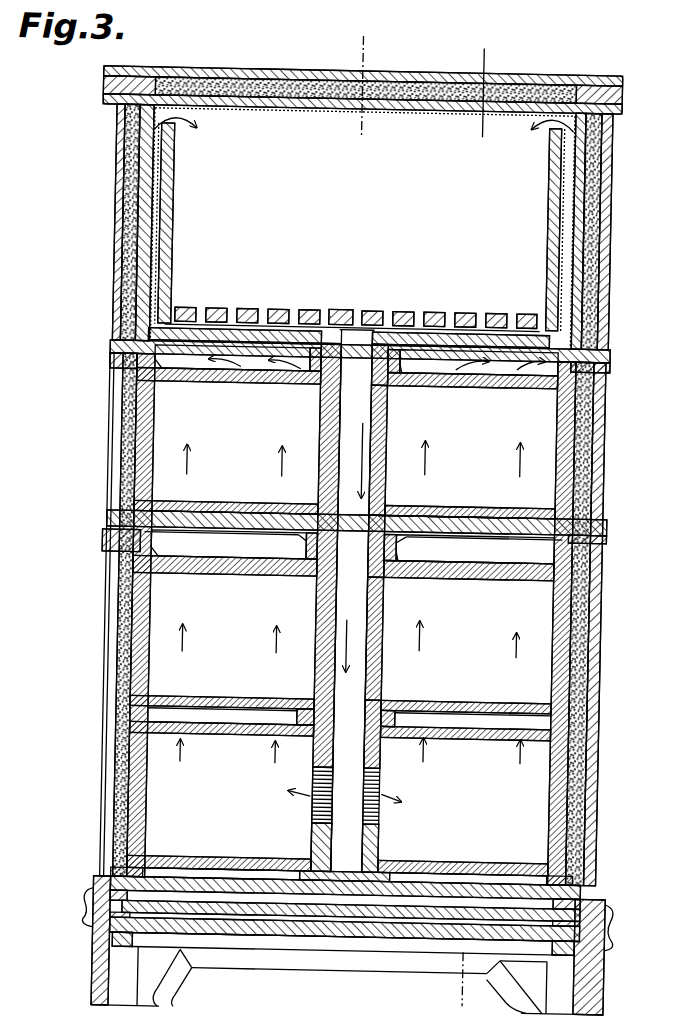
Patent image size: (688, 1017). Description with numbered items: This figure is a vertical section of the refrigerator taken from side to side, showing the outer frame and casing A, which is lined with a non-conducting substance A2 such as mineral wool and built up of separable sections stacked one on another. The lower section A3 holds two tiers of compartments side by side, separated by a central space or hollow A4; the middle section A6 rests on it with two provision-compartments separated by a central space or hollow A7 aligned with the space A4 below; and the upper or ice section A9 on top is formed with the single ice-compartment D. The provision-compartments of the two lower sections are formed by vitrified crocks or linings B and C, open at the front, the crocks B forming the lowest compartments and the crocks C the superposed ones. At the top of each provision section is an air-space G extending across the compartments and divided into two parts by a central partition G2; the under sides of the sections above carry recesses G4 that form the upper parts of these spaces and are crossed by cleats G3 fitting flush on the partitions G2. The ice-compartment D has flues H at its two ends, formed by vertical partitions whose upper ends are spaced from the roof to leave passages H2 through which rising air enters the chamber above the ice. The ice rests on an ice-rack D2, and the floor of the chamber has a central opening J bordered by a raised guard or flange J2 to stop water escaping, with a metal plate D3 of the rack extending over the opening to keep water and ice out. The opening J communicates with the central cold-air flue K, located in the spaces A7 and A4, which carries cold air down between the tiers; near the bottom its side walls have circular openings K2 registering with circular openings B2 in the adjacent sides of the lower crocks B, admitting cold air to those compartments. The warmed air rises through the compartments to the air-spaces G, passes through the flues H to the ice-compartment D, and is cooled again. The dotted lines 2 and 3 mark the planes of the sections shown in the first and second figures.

The outer frame and casing A is at (247, 72).
The non-conducting substance A2 is at (595, 266).
The lower section A3 is at (108, 711).
The central space or hollow of lower section A4 is at (384, 680).
The middle section A6 is at (598, 476).
The central space or hollow of middle section A7 is at (386, 483).
The upper or ice section A9 is at (109, 287).
The crocks or linings of lower compartments B is at (339, 790).
The circular openings in crocks B2 is at (317, 818).
The crocks or linings of upper compartments C is at (318, 618).
The ice-compartment D is at (363, 228).
The ice-rack D2 is at (463, 314).
The metal plate D3 is at (346, 316).
The air-space G is at (354, 474).
The central partition G2 is at (309, 376).
The cleat G3 is at (454, 360).
The recess G4 is at (256, 534).
The flue H is at (160, 237).
The passage H2 is at (168, 115).
The central opening J is at (348, 360).
The raised guard or flange J2 is at (326, 328).
The central cold-air flue K is at (365, 608).
The circular openings in flue walls K2 is at (366, 776).
The section line of Fig. 1 2 is at (361, 74).
The section line of Fig. 2 3 is at (472, 518).